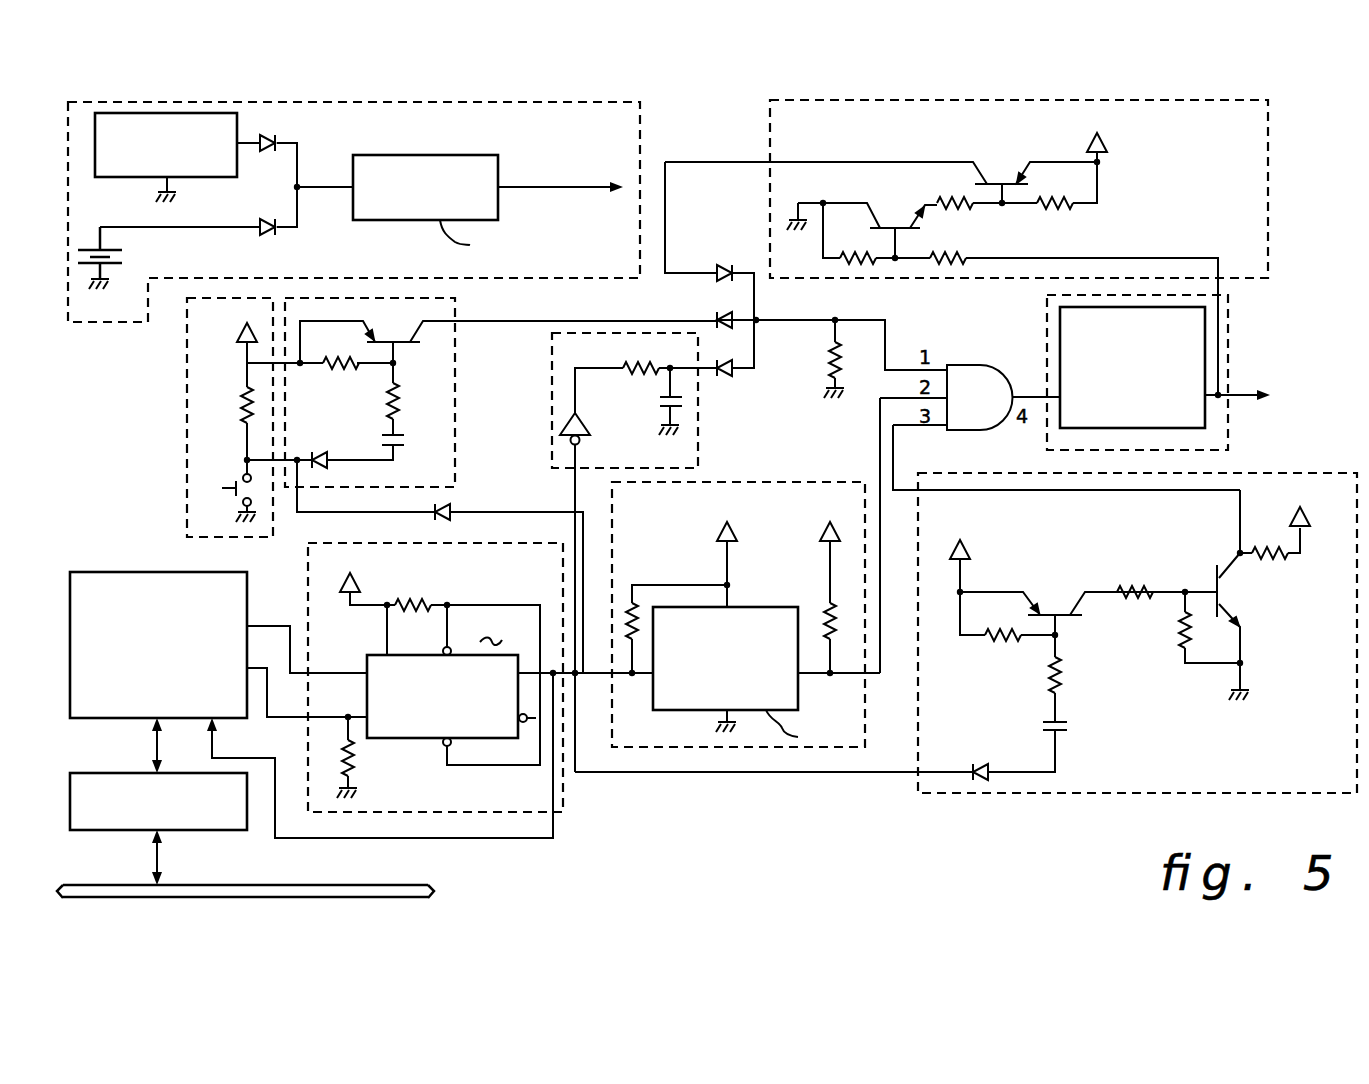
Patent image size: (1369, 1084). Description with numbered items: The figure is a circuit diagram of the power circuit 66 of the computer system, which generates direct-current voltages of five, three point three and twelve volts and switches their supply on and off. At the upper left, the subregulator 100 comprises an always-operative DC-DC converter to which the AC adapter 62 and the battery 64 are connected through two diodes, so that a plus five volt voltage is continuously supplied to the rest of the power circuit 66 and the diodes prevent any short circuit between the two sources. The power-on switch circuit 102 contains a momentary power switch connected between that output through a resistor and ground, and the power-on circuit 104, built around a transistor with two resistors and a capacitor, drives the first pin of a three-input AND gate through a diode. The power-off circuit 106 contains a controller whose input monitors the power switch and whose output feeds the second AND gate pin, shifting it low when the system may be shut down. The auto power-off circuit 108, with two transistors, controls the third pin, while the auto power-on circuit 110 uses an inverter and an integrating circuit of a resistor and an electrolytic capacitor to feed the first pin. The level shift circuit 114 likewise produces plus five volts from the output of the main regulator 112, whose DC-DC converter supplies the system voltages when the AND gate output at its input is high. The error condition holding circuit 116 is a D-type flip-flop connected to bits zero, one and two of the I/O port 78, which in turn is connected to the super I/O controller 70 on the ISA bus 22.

The ISA bus 22 is at (197, 885).
The AC adapter 62 is at (238, 114).
The battery 64 is at (123, 254).
The power circuit 66 is at (1314, 183).
The super I/O controller 70 is at (133, 773).
The I/O port 78 is at (133, 572).
The subregulator 100 is at (640, 131).
The power-on switch circuit 102 is at (188, 352).
The power-on circuit 104 is at (455, 403).
The power-off circuit 106 is at (660, 749).
The auto power-off circuit 108 is at (1100, 795).
The auto power-on circuit 110 is at (553, 347).
The main regulator 112 is at (1230, 355).
The level shift circuit 114 is at (770, 186).
The error condition holding circuit 116 is at (487, 812).